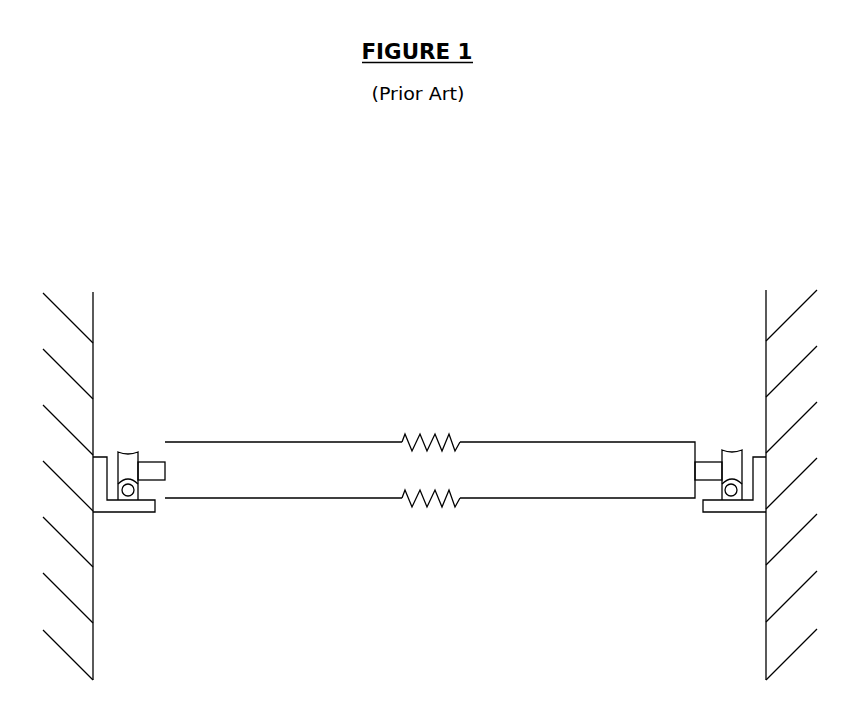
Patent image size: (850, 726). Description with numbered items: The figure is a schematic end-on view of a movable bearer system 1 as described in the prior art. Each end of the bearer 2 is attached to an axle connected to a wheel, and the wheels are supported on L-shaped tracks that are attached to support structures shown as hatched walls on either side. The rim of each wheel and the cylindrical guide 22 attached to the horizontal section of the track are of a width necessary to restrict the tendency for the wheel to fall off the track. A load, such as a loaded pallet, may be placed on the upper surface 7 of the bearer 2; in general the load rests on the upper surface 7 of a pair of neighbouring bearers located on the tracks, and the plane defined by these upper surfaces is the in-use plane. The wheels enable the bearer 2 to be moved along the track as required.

The movable bearer system 1 is at (403, 305).
The bearer 2 is at (543, 485).
The upper surface 7 is at (267, 457).
The cylindrical guide 22 is at (132, 490).